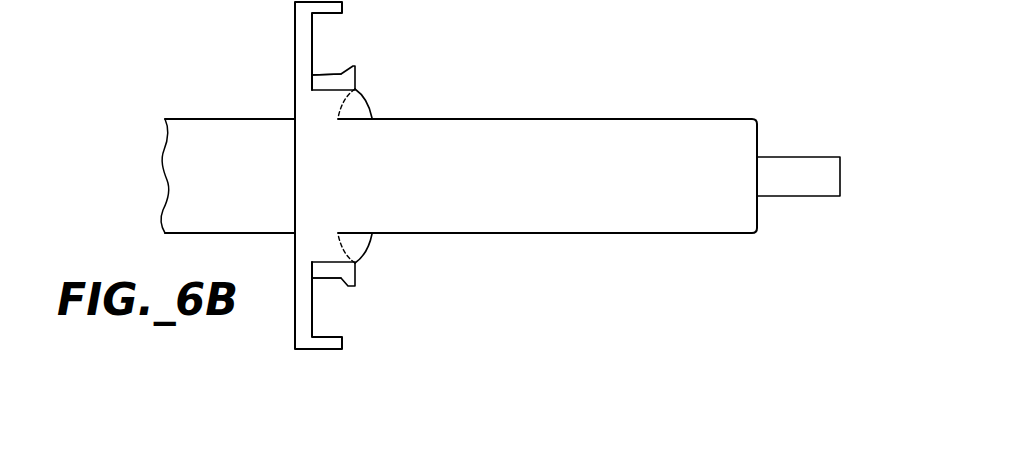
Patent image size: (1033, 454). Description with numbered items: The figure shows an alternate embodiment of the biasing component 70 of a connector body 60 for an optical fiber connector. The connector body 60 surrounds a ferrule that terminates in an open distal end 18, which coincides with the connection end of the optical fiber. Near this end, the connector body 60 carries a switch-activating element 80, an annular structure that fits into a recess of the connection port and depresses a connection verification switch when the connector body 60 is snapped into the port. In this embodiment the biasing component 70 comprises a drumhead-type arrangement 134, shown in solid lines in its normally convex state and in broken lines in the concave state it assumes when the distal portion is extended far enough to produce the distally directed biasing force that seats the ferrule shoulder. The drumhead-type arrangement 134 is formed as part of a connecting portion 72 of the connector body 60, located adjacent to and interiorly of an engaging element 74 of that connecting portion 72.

The connector body 60 is at (509, 44).
The open distal end 18 is at (840, 178).
The switch-activating element 80 is at (304, 43).
The biasing component 70 is at (381, 234).
The engaging element 74 is at (358, 273).
The connecting portion 72 is at (333, 270).
The drumhead-type arrangement 134 is at (368, 98).